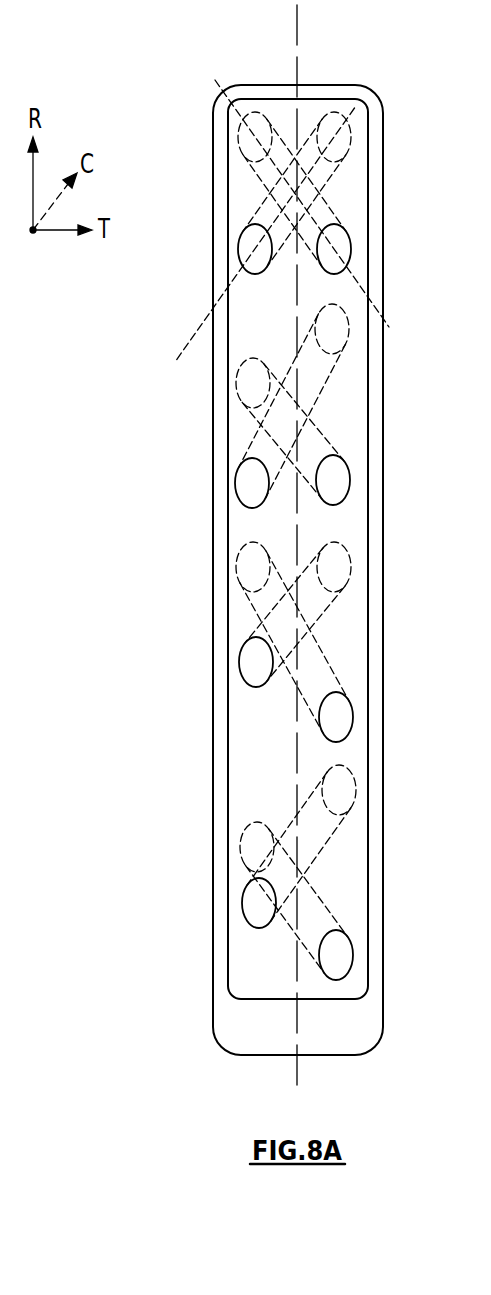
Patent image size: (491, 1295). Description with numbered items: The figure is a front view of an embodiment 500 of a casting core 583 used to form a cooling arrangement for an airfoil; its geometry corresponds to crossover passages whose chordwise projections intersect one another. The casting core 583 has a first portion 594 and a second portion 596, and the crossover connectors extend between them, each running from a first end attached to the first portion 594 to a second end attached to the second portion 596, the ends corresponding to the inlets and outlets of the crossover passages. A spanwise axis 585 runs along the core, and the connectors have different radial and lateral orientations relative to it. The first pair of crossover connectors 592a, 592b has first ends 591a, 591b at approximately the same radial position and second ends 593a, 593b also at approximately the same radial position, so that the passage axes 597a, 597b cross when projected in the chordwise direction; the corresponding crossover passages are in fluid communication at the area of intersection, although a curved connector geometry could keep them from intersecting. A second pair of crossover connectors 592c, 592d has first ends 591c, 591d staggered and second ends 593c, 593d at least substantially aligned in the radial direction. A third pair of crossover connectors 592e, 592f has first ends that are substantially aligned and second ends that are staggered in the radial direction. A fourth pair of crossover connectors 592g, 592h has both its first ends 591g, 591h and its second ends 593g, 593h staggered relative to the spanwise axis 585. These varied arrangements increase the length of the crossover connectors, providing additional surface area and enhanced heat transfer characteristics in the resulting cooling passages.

The embodiment of casting core 500 is at (150, 52).
The casting core 583 is at (160, 110).
The spanwise axis 585 is at (297, 1075).
The first portion 594 is at (213, 139).
The second portion 596 is at (228, 200).
The first end 591a is at (257, 113).
The first end 591b is at (333, 113).
The first end 591c is at (348, 338).
The first end 591d is at (237, 383).
The first end 591g is at (240, 847).
The first end 591h is at (356, 788).
The crossover connector 592a is at (285, 143).
The crossover connector 592b is at (310, 133).
The crossover connector 592c is at (250, 441).
The crossover connector 592d is at (332, 447).
The crossover connector 592e is at (252, 607).
The crossover connector 592f is at (332, 602).
The crossover connector 592g is at (290, 927).
The crossover connector 592h is at (340, 825).
The second end 593a is at (350, 248).
The second end 593b is at (238, 247).
The second end 593c is at (235, 483).
The second end 593d is at (350, 480).
The second end 593g is at (353, 953).
The second end 593h is at (242, 905).
The passage axis 597a is at (388, 325).
The passage axis 597b is at (192, 333).